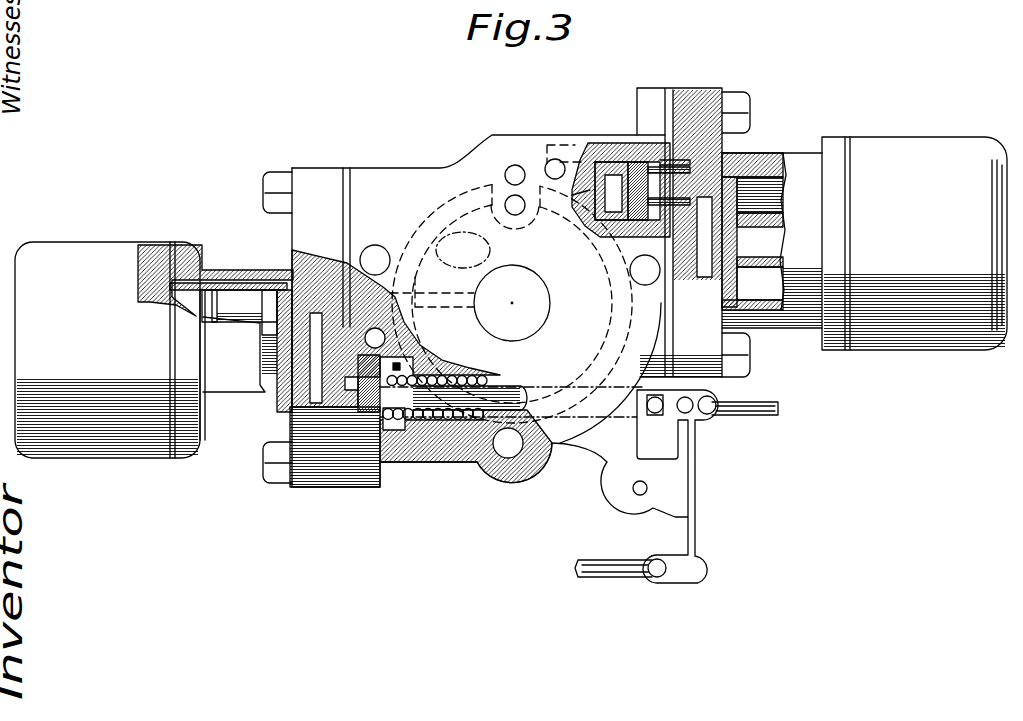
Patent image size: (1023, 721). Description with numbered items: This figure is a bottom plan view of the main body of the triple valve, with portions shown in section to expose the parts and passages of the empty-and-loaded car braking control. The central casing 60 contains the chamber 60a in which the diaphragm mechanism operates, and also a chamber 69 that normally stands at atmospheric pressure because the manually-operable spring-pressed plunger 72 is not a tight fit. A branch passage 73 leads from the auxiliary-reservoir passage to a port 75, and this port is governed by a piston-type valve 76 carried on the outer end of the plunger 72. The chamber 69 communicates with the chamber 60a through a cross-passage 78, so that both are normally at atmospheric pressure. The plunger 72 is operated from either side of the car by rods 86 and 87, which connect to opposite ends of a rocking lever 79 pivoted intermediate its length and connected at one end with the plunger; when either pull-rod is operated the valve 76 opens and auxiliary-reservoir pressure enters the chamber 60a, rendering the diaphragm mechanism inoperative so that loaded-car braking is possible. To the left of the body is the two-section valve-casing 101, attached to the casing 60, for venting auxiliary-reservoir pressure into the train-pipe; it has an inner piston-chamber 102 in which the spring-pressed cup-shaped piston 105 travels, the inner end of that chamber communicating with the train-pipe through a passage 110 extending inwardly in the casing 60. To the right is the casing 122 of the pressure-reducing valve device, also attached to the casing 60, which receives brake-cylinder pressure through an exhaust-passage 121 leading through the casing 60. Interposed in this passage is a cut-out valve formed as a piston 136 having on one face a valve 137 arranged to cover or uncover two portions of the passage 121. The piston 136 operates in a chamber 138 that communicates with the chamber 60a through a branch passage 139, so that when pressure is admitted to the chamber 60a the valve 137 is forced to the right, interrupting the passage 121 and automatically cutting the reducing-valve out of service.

The casing 60 is at (398, 178).
The chamber 60a is at (463, 250).
The chamber 69 is at (392, 432).
The plunger 72 is at (476, 405).
The branch passage 73 is at (383, 347).
The port 75 is at (342, 407).
The valve 76 is at (345, 390).
The cross-passage 78 is at (415, 343).
The rocking lever 79 is at (688, 494).
The rod 86 is at (636, 583).
The rod 87 is at (772, 418).
The valve-casing 101 is at (107, 350).
The inner piston-chamber 102 is at (210, 268).
The cup-shaped piston 105 is at (235, 300).
The passage 110 is at (165, 272).
The exhaust-passage 121 is at (556, 159).
The casing 122 is at (914, 243).
The piston 136 is at (612, 236).
The valve 137 is at (651, 168).
The chamber 138 is at (608, 180).
The branch passage 139 is at (574, 203).